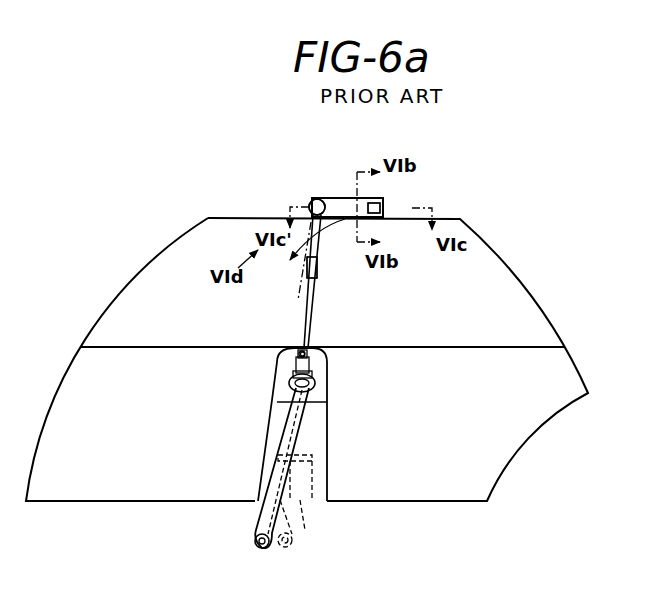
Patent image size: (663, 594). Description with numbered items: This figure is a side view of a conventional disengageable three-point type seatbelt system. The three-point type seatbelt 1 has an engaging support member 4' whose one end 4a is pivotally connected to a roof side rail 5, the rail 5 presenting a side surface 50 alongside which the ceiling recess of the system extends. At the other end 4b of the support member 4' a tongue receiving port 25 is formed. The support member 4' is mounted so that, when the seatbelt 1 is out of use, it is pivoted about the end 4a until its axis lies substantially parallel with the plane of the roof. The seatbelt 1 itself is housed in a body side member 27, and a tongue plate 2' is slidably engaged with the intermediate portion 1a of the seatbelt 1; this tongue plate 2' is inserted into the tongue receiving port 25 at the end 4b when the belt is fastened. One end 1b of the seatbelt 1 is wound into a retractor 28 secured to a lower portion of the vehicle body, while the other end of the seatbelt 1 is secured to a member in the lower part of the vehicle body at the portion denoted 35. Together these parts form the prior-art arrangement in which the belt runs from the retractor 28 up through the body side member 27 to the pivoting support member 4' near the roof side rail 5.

The roof side rail 5 is at (318, 170).
The side surface of the rail 50 is at (310, 169).
The one end of the engaging support member 4a is at (316, 199).
The other end of the engaging support member 4b is at (382, 202).
The tongue receiving port 25 is at (382, 211).
The engaging support member 4' is at (293, 281).
The tongue plate 2' is at (328, 338).
The three-point type seatbelt 1 is at (318, 428).
The intermediate portion of the seatbelt 1a is at (294, 392).
The one end of the seatbelt 1b is at (315, 457).
The body side member 27 is at (268, 436).
The retractor 28 is at (318, 505).
The securing portion in the lower part of the vehicle body 35 is at (262, 550).